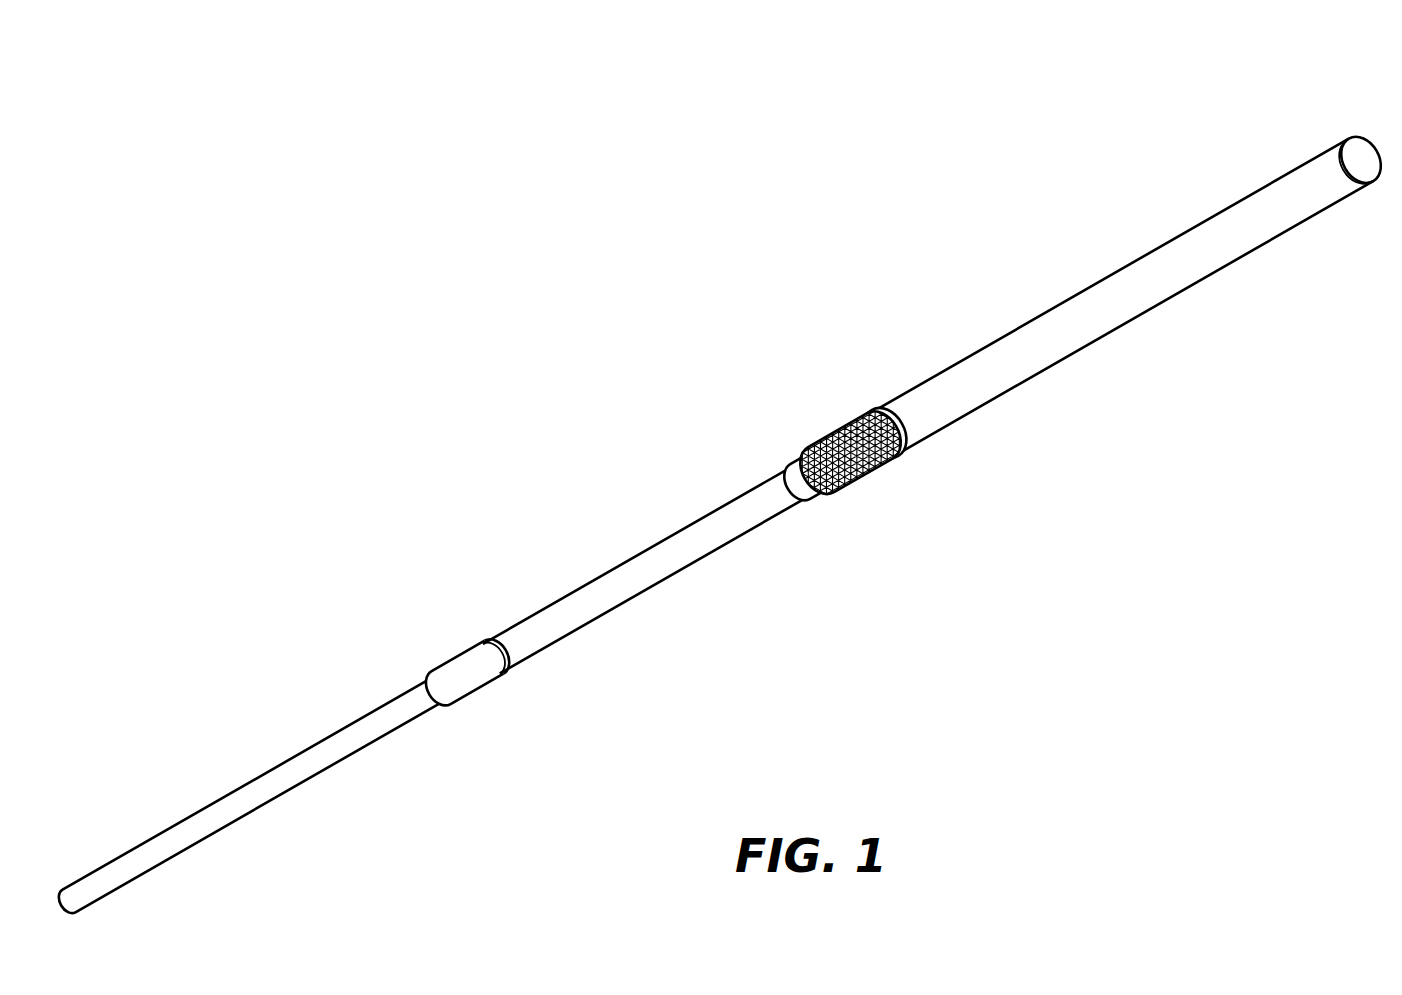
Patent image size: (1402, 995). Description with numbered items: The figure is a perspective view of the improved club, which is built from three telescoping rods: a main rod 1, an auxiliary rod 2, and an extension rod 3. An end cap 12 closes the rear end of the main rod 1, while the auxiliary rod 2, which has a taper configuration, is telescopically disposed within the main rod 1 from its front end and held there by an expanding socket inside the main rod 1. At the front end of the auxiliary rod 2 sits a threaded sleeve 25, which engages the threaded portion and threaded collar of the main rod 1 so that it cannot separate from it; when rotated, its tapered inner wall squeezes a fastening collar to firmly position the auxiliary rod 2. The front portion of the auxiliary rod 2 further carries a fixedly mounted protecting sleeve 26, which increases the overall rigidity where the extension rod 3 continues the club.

The main rod 1 is at (946, 388).
The auxiliary rod 2 is at (653, 557).
The extension rod 3 is at (273, 778).
The end cap 12 is at (1363, 156).
The threaded sleeve 25 is at (842, 420).
The protecting sleeve 26 is at (460, 662).